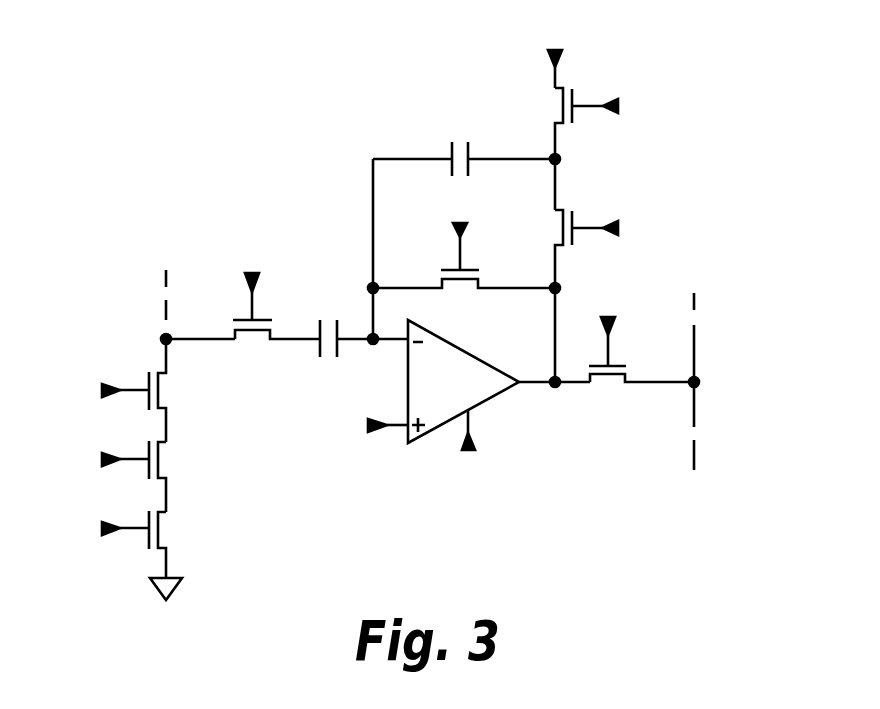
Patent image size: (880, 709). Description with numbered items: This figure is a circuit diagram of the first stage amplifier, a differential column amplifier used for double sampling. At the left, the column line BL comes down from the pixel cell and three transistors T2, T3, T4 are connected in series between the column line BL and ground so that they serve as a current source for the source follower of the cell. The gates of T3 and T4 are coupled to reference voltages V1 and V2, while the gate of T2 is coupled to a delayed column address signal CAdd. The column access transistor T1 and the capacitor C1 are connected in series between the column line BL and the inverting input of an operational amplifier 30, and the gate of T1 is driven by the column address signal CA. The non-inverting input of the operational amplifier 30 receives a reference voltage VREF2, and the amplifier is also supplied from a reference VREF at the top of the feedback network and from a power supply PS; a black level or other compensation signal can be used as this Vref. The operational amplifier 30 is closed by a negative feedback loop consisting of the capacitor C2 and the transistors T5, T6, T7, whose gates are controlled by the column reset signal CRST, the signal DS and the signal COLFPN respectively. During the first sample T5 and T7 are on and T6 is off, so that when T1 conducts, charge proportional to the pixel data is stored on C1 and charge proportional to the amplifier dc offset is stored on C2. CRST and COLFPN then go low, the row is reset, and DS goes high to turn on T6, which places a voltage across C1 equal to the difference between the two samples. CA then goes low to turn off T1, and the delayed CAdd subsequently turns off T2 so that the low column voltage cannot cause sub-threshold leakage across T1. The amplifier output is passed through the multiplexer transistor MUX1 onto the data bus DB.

The operational amplifier 30 is at (463, 382).
The column access transistor T1 is at (276, 334).
The transistor T2 is at (164, 390).
The transistor T3 is at (165, 476).
The transistor T4 is at (165, 544).
The transistor T5 is at (464, 283).
The transistor T6 is at (557, 296).
The transistor T7 is at (557, 149).
The capacitor C1 is at (343, 323).
The capacitor C2 is at (464, 140).
The multiplexer transistor MUX1 is at (634, 332).
The column line BL is at (189, 285).
The column address signal CA is at (261, 263).
The delayed column address signal CAdd is at (70, 395).
The reference voltage V1 is at (83, 459).
The reference voltage V2 is at (85, 529).
The column reset signal CRST is at (461, 215).
The reference voltage VREF is at (573, 50).
The reference voltage VREF2 is at (354, 434).
The column fixed pattern noise signal COLFPN is at (685, 106).
The DS signal DS is at (640, 229).
The power supply PS is at (471, 448).
The data bus DB is at (699, 403).